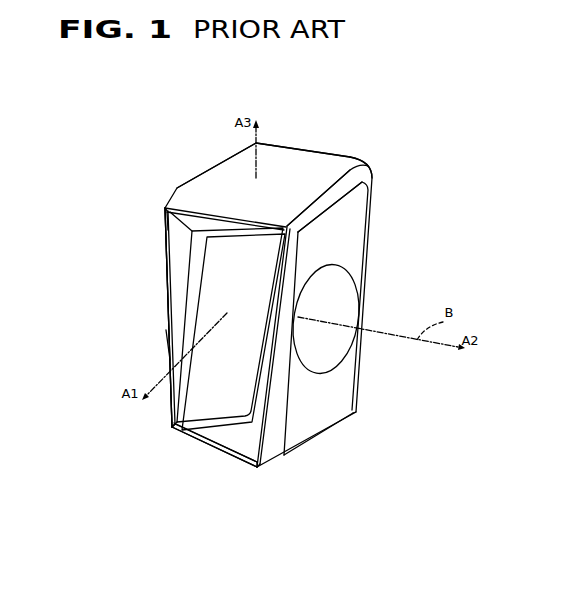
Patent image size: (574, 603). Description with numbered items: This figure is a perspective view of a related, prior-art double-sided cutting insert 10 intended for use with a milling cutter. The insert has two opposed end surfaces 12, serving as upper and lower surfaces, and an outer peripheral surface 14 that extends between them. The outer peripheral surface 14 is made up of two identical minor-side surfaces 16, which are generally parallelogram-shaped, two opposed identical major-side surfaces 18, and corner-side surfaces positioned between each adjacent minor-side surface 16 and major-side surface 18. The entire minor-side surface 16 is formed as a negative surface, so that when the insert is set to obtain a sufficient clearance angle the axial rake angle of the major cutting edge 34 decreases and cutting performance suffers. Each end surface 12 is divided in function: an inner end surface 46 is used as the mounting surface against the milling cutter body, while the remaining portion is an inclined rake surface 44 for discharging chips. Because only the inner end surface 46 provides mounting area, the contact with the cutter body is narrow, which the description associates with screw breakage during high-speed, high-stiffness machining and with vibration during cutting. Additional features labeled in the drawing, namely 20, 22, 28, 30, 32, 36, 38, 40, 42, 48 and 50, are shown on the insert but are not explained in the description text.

The double-sided cutting insert 10 is at (427, 137).
The end surfaces 12 is at (201, 297).
The outer peripheral surface 14 is at (216, 177).
The minor-side surface 16 is at (300, 163).
The major-side surface 18 is at (350, 217).
The corner 20 is at (337, 192).
The through hole 22 is at (338, 308).
The corner edge 28 is at (163, 207).
The corner 30 is at (170, 427).
The cutting edge 32 is at (158, 257).
The major cutting edge 34 is at (168, 335).
The land 36 is at (197, 443).
The edge 38 is at (163, 211).
The edge 40 is at (163, 213).
The edge 42 is at (170, 429).
The rake surface 44 is at (176, 272).
The inner end surface 46 is at (163, 354).
The inner recess 48 is at (199, 318).
The corner 50 is at (265, 413).